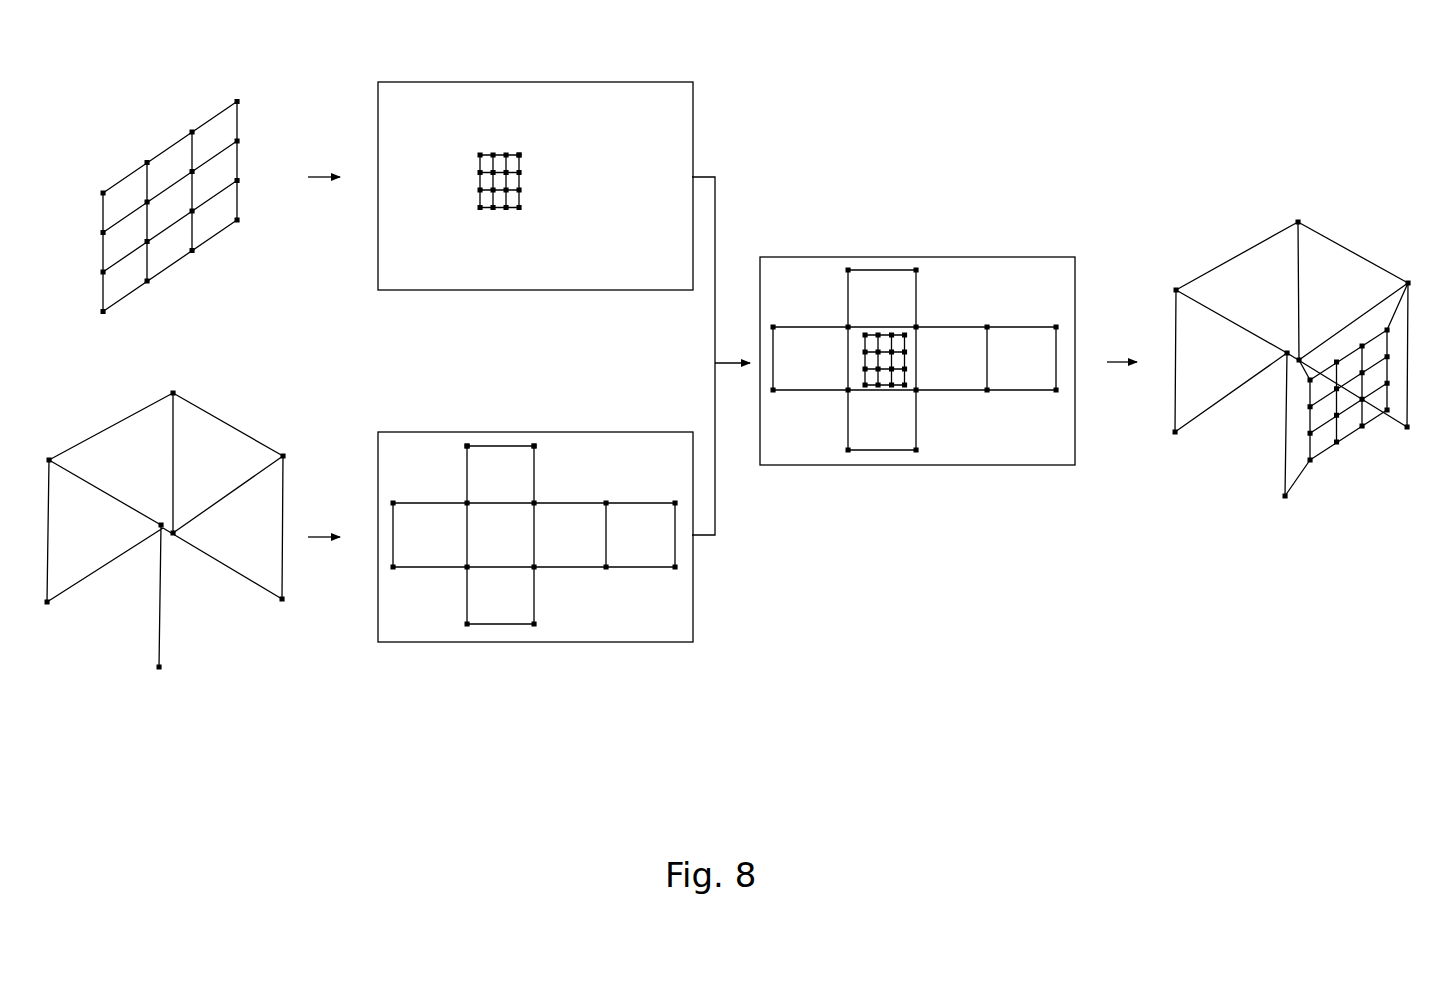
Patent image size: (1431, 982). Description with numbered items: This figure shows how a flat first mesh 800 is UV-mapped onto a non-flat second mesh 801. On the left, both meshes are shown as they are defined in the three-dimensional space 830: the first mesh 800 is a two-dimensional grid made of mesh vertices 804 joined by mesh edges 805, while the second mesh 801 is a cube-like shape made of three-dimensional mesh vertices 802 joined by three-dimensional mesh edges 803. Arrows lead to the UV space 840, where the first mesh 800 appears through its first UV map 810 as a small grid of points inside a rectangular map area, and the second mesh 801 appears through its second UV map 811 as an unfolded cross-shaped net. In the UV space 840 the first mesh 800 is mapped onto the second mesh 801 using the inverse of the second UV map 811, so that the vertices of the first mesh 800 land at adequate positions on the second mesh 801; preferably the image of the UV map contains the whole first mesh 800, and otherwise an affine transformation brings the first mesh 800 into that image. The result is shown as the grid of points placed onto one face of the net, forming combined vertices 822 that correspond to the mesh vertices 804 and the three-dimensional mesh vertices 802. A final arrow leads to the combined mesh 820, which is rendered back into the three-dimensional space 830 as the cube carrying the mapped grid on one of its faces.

The first mesh 800 is at (150, 136).
The second mesh 801 is at (98, 422).
The 3D mesh vertices 802 is at (465, 446).
The 3D mesh edges 803 is at (517, 442).
The mesh vertices 804 is at (480, 150).
The mesh edges 805 is at (513, 150).
The first UV map 810 is at (415, 108).
The second UV map 811 is at (638, 462).
The combined mesh 820 is at (1242, 307).
The combined vertices 822 is at (892, 328).
The 3D space 830 is at (130, 687).
The UV space 840 is at (683, 700).